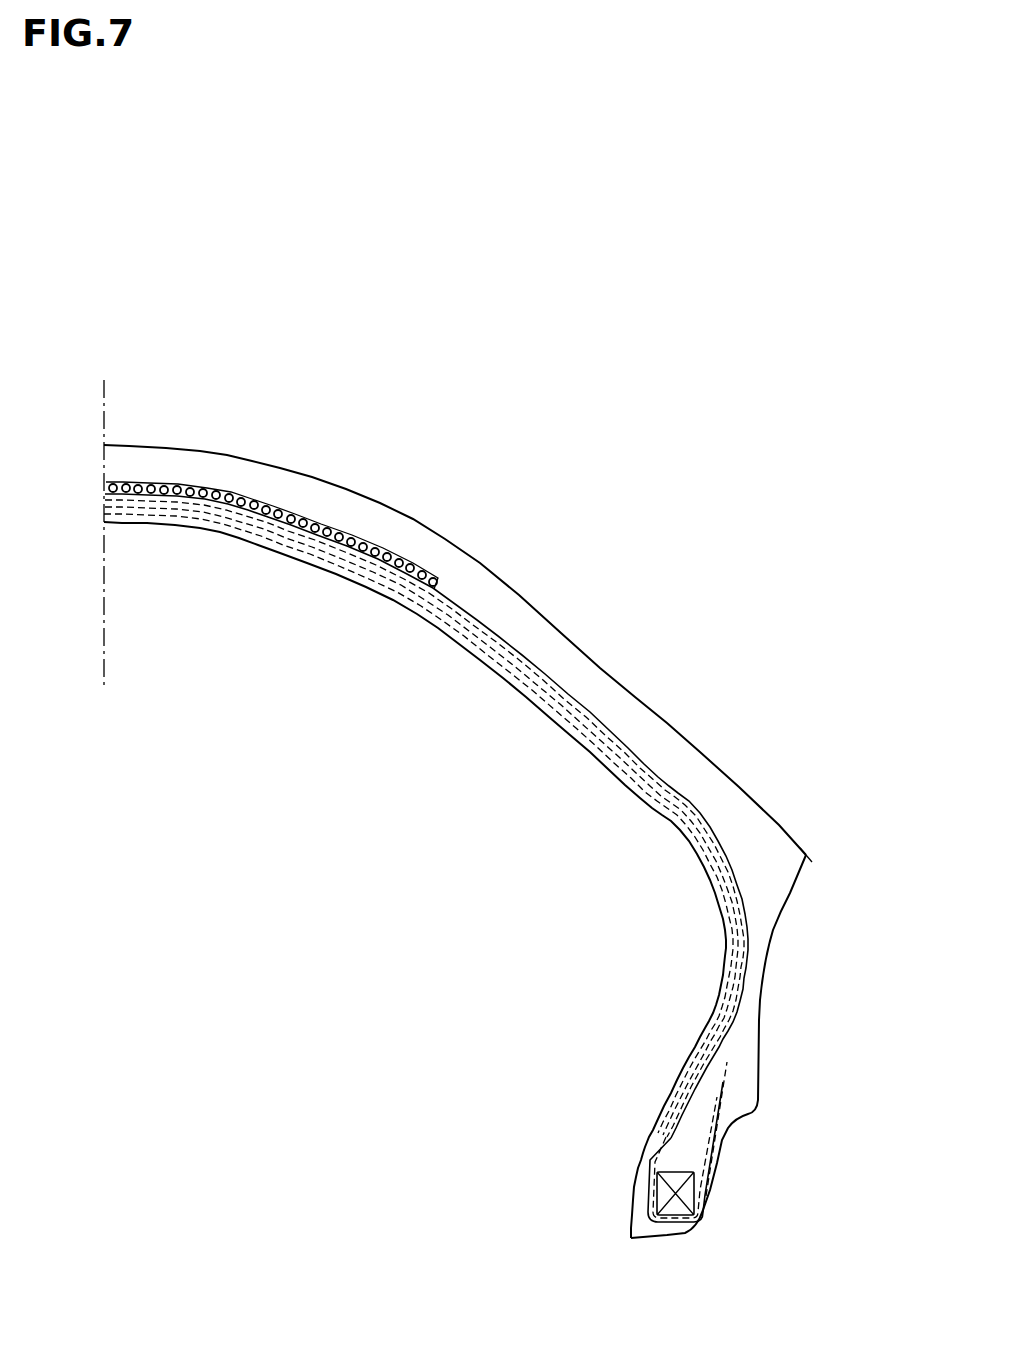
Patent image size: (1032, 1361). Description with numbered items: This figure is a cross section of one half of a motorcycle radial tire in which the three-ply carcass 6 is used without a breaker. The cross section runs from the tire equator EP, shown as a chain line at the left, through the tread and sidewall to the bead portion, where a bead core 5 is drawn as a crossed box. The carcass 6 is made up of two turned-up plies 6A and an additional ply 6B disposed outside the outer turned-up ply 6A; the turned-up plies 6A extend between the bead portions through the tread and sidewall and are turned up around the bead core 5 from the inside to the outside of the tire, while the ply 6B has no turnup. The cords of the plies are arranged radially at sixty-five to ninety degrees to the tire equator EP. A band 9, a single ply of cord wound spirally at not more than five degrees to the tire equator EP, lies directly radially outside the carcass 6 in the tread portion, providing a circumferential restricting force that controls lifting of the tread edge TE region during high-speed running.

The bead core 5 is at (662, 1196).
The carcass 6 is at (426, 858).
The turned-up carcass ply 6A is at (570, 718).
The additional carcass ply 6B is at (650, 765).
The band 9 is at (352, 536).
The tread edge TE is at (806, 855).
The tire equator EP is at (102, 554).